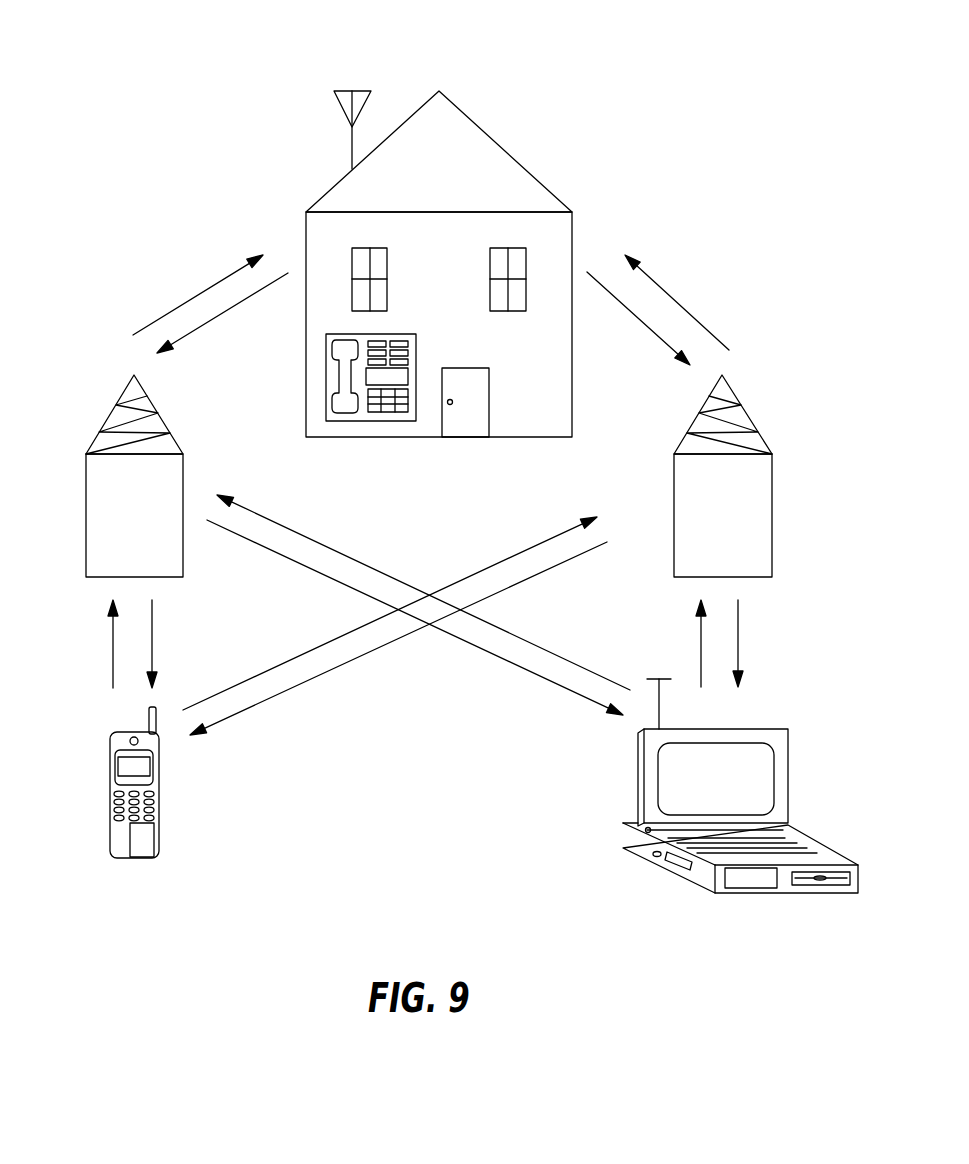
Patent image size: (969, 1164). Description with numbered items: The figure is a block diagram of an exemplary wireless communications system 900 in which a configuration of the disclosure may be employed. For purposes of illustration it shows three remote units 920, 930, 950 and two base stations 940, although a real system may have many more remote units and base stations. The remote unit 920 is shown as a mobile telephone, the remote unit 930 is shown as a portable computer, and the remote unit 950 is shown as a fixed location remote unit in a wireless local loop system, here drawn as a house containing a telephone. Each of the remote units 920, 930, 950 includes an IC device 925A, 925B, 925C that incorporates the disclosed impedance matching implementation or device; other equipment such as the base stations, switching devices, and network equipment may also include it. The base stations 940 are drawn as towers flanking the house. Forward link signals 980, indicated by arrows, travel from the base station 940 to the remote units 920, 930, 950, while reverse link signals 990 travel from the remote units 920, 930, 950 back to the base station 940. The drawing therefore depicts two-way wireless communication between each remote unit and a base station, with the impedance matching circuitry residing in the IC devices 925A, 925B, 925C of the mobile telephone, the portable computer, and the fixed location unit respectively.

The wireless communication system 900 is at (155, 62).
The remote unit 920 is at (112, 745).
The IC device 925A is at (142, 849).
The IC device 925B is at (402, 376).
The IC device 925C is at (753, 880).
The remote unit 930 is at (757, 729).
The base station 940 is at (118, 406).
The remote unit 950 is at (326, 375).
The forward link signals 980 is at (200, 292).
The reverse link signals 990 is at (228, 315).